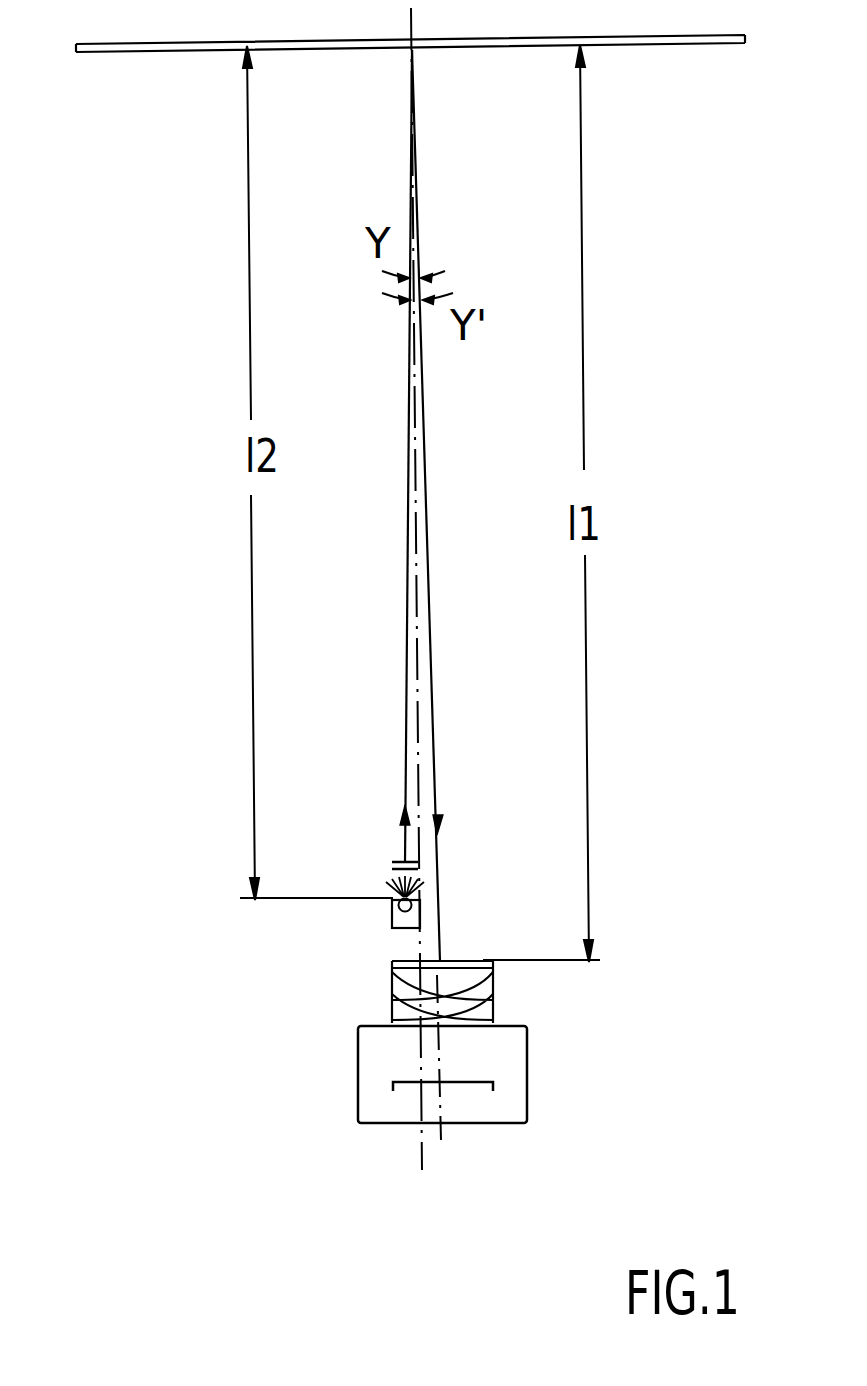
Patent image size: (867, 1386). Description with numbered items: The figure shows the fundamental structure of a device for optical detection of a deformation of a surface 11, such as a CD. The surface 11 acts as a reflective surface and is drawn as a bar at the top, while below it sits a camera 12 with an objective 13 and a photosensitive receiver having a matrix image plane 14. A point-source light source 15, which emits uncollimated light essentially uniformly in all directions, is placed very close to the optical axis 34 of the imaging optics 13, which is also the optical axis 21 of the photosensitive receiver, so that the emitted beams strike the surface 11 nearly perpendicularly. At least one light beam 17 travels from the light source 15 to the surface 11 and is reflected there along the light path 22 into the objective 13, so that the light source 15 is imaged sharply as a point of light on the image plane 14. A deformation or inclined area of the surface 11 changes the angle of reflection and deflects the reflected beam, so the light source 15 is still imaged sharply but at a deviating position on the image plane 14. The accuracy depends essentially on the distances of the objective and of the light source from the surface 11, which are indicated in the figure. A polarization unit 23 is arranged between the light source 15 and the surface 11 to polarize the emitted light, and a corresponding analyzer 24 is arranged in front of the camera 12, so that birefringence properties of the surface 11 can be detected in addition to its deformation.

The surface 11 is at (119, 53).
The camera 12 is at (527, 1102).
The objective 13 is at (392, 990).
The matrix image plane 14 is at (417, 1078).
The point-source light source 15 is at (392, 912).
The light beam 17 is at (407, 515).
The optical axis of the photosensitive receiver 21 is at (441, 1058).
The light path 22 is at (429, 580).
The polarization unit 23 is at (392, 866).
The analyzer 24 is at (490, 963).
The optical axis of the imaging optics 34 is at (417, 680).